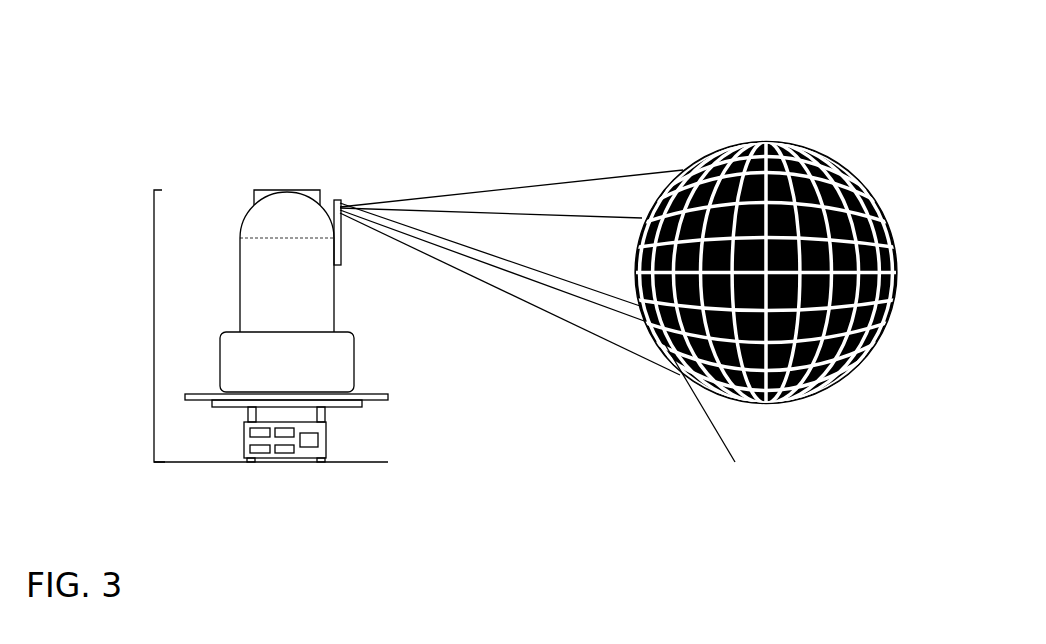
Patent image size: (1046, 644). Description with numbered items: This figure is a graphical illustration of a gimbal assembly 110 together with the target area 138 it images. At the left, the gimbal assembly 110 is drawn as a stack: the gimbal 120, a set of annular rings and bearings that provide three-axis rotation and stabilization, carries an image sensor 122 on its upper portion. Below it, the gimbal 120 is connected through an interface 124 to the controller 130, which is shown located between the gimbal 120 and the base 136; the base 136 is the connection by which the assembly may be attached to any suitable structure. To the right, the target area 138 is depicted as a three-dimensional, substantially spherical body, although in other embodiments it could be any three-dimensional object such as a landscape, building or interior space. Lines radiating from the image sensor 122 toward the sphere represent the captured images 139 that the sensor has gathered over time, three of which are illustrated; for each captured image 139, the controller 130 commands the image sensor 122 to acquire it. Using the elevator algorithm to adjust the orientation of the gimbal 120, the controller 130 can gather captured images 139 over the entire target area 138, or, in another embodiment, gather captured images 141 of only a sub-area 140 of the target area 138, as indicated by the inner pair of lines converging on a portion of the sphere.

The gimbal assembly 110 is at (154, 325).
The gimbal 120 is at (354, 362).
The image sensor 122 is at (343, 200).
The interface 124 is at (393, 393).
The controller 130 is at (326, 428).
The base 136 is at (385, 462).
The target area 138 is at (678, 134).
The captured images 139 is at (625, 176).
The sub-area 140 is at (712, 413).
The captured images 141 is at (550, 275).